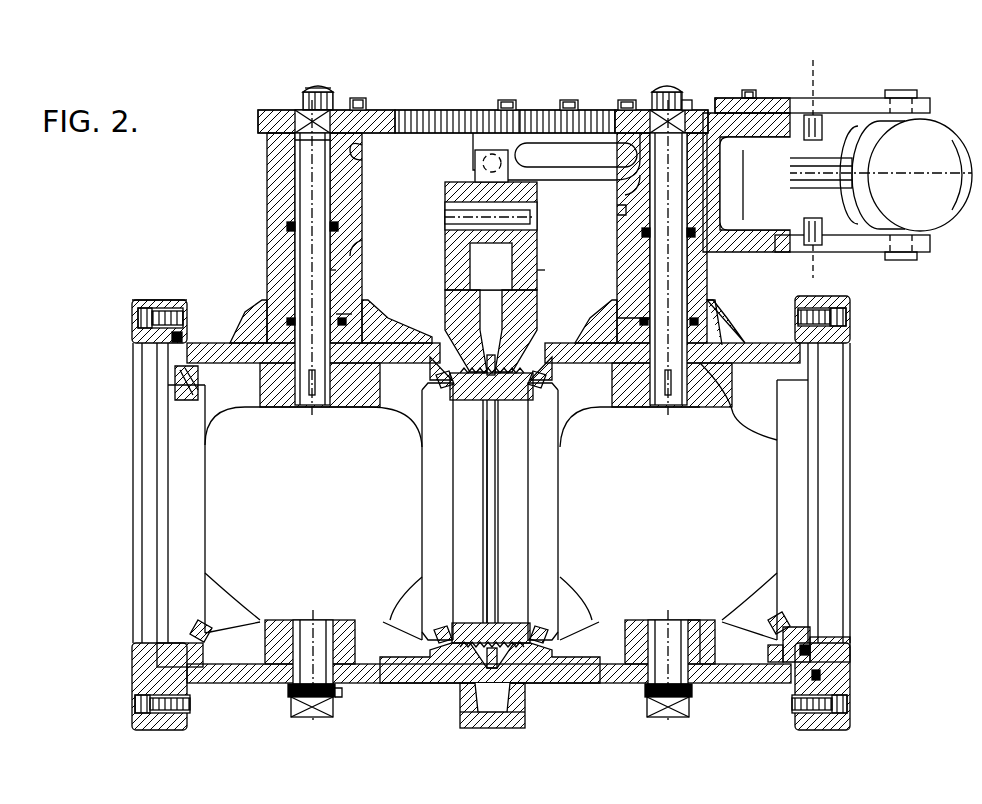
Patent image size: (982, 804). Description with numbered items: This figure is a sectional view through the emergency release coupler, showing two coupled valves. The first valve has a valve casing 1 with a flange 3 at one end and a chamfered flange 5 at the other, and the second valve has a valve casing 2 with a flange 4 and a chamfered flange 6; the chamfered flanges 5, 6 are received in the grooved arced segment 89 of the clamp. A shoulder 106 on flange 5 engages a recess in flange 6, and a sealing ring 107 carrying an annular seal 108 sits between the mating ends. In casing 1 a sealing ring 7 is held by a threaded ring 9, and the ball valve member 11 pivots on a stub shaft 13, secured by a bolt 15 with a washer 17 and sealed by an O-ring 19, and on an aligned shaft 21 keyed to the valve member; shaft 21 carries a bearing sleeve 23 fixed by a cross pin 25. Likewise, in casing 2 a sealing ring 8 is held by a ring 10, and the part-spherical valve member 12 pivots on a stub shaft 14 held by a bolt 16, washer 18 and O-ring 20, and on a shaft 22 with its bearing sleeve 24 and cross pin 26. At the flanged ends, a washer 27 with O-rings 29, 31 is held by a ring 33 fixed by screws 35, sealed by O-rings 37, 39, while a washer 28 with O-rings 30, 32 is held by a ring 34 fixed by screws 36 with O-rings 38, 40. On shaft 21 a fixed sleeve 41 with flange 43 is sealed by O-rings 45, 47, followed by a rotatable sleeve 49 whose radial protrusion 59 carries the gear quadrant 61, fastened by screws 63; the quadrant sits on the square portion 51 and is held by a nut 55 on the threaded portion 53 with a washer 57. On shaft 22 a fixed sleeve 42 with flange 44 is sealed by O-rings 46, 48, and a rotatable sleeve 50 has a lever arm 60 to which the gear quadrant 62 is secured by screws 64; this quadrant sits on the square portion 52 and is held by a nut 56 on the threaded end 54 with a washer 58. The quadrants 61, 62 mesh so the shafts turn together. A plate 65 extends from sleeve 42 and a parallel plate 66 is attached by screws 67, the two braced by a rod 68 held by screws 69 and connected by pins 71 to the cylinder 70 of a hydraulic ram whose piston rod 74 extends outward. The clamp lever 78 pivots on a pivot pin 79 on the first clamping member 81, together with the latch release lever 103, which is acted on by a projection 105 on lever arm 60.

The valve casing 1 is at (400, 680).
The valve casing 2 is at (740, 683).
The flange 3 is at (180, 300).
The flange 4 is at (805, 712).
The chamfered flange 5 is at (465, 700).
The chamfered flange 6 is at (498, 720).
The sealing ring 7 is at (430, 612).
The sealing ring 8 is at (560, 620).
The ring 9 is at (445, 660).
The ring 10 is at (512, 602).
The ball valve member 11 is at (255, 625).
The part-spherical valve member 12 is at (800, 432).
The shaft 13 is at (315, 640).
The shaft 14 is at (668, 630).
The bolt 15 is at (310, 717).
The bolt 16 is at (648, 705).
The washer 17 is at (288, 700).
The washer 18 is at (678, 717).
The O-ring 19 is at (345, 717).
The O-ring 20 is at (700, 640).
The shaft 21 is at (300, 263).
The shaft 22 is at (672, 266).
The sleeve 23 is at (362, 340).
The sleeve 24 is at (732, 345).
The cross pin 25 is at (350, 276).
The cross pin 26 is at (715, 302).
The washer 27 is at (215, 683).
The washer 28 is at (800, 626).
The O-ring 29 is at (158, 677).
The O-ring 30 is at (788, 674).
The O-ring 31 is at (212, 628).
The O-ring 32 is at (770, 625).
The ring 33 is at (150, 300).
The ring 34 is at (835, 652).
The screws 35 is at (158, 308).
The screws 36 is at (848, 700).
The O-ring 37 is at (175, 378).
The O-ring 38 is at (818, 642).
The O-ring 39 is at (172, 336).
The O-ring 40 is at (822, 682).
The sleeve 41 is at (352, 245).
The sleeve 42 is at (630, 292).
The flange 43 is at (352, 316).
The flange 44 is at (640, 320).
The O-ring 45 is at (285, 320).
The O-ring 46 is at (638, 322).
The O-ring 47 is at (285, 226).
The O-ring 48 is at (640, 232).
The sleeve 49 is at (345, 185).
The sleeve 50 is at (626, 212).
The portion 51 is at (300, 141).
The portion 52 is at (632, 180).
The screw-threaded portion 53 is at (326, 90).
The screw-threaded end portion 54 is at (668, 88).
The nut 55 is at (303, 96).
The nut 56 is at (688, 100).
The washer 57 is at (298, 112).
The washer 58 is at (652, 114).
The radial protrusion 59 is at (352, 150).
The lever arm 60 is at (545, 140).
The gear quadrant 61 is at (415, 110).
The gear quadrant 62 is at (532, 108).
The screws 63 is at (360, 98).
The screws 64 is at (500, 104).
The plate 65 is at (878, 252).
The plate 66 is at (860, 86).
The screws 67 is at (749, 90).
The rod 68 is at (804, 128).
The screws 69 is at (790, 272).
The cylinder 70 is at (940, 128).
The pins 71 is at (900, 98).
The rod 74 is at (790, 172).
The lever 78 is at (455, 258).
The pivot pin 79 is at (450, 222).
The first clamping member 81 is at (537, 282).
The arced segment 89 is at (468, 720).
The latch release lever 103 is at (478, 178).
The projection 105 is at (485, 162).
The shoulder 106 is at (494, 330).
The sealing ring 107 is at (560, 388).
The annular seal 108 is at (540, 440).